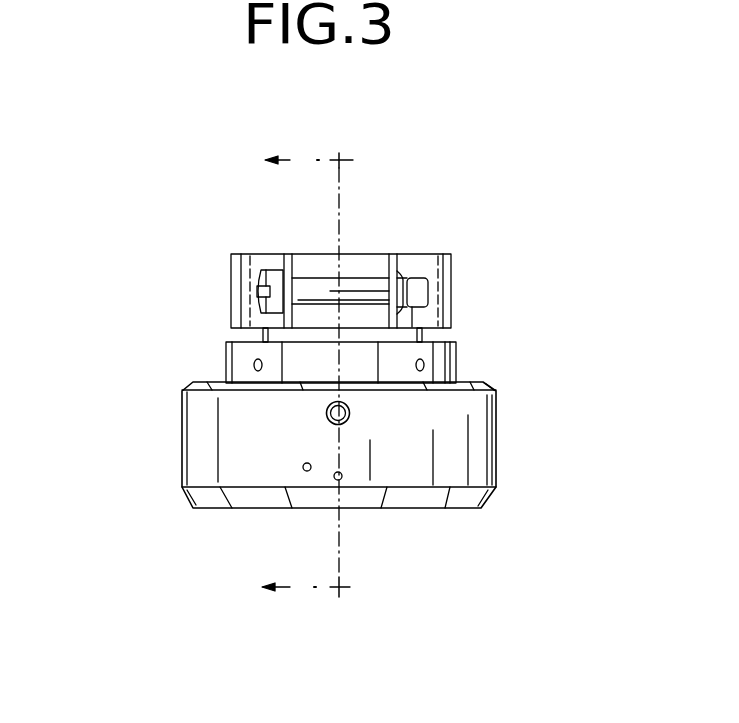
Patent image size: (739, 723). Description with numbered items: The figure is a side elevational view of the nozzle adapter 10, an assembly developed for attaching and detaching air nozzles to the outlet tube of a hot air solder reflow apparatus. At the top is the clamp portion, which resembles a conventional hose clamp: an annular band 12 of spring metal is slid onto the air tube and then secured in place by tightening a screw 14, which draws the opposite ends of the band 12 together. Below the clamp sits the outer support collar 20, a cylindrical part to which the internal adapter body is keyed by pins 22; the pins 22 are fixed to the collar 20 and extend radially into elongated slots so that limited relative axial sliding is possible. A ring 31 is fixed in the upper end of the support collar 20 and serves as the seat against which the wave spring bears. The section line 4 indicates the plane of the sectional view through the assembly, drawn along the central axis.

The section line 4- 4 is at (307, 372).
The nozzle adapter 10 is at (442, 175).
The annular band 12 is at (464, 283).
The screw 14 is at (242, 272).
The outer support collar 20 is at (168, 440).
The pins 22 is at (350, 415).
The ring 31 is at (506, 380).